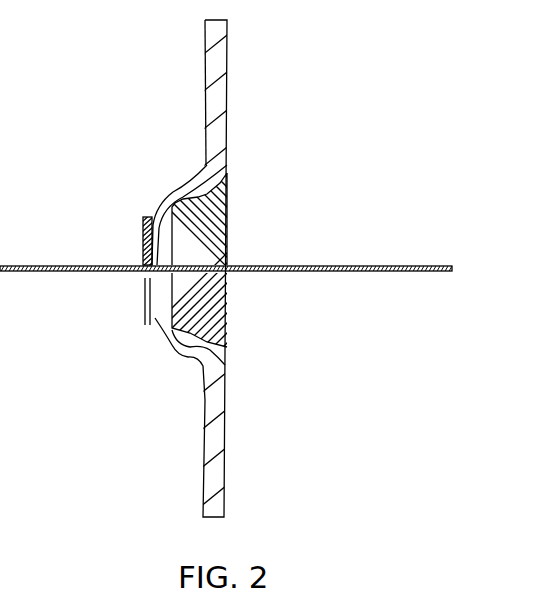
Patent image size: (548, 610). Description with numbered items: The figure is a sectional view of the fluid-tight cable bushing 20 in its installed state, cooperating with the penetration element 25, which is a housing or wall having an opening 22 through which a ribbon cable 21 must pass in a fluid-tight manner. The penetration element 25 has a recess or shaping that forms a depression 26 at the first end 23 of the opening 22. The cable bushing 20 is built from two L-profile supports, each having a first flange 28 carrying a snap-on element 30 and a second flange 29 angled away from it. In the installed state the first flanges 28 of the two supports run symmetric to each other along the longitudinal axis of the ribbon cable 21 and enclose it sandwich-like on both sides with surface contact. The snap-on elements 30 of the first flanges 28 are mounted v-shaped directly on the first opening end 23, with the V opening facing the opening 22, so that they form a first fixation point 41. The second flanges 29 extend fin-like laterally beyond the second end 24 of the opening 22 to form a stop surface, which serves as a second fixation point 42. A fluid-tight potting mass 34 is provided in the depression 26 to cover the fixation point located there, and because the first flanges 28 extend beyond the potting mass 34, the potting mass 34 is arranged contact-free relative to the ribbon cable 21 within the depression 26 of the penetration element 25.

The cable bushing 20 is at (342, 54).
The ribbon cable 21 is at (350, 265).
The opening 22 is at (145, 272).
The first end 23 is at (227, 242).
The second end 24 is at (146, 259).
The penetration element 25 is at (205, 138).
The depression 26 is at (163, 202).
The first flange 28 is at (227, 273).
The second flange 29 is at (162, 290).
The snap-on element 30 is at (227, 228).
The potting mass 34 is at (225, 337).
The first fixation point 41 is at (168, 292).
The second fixation point 42 is at (143, 311).